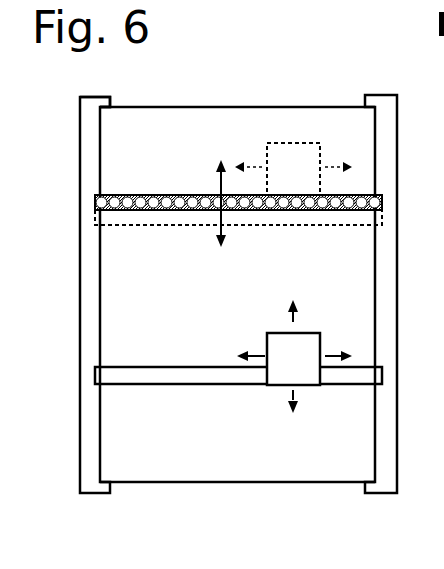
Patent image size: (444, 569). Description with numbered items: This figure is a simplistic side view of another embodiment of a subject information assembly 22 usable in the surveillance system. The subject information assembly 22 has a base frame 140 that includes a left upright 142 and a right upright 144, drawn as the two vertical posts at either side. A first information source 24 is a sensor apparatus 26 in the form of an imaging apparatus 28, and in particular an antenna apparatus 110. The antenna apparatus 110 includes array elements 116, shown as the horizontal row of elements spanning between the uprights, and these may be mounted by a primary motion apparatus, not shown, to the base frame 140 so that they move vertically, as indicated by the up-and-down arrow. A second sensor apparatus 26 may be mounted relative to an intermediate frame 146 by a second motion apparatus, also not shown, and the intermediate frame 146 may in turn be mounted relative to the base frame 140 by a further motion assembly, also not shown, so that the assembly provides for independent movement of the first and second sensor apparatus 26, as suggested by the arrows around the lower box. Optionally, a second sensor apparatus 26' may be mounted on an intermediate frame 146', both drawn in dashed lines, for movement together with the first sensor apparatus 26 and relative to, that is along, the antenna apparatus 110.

The subject information assembly 22 is at (331, 67).
The first information source 24 is at (210, 117).
The sensor apparatus 26 is at (285, 330).
The second sensor apparatus 26' is at (293, 155).
The imaging apparatus 28 is at (157, 183).
The antenna apparatus 110 is at (112, 185).
The array elements 116 is at (165, 203).
The base frame 140 is at (104, 82).
The left upright 142 is at (80, 148).
The right upright 144 is at (398, 312).
The intermediate frame 146 is at (238, 400).
The intermediate frame 146' is at (238, 251).